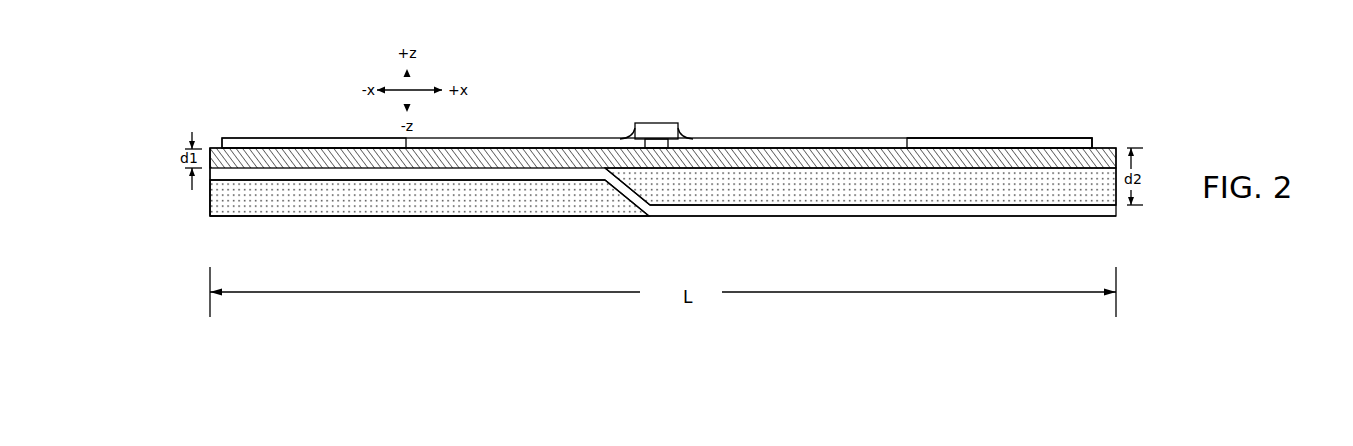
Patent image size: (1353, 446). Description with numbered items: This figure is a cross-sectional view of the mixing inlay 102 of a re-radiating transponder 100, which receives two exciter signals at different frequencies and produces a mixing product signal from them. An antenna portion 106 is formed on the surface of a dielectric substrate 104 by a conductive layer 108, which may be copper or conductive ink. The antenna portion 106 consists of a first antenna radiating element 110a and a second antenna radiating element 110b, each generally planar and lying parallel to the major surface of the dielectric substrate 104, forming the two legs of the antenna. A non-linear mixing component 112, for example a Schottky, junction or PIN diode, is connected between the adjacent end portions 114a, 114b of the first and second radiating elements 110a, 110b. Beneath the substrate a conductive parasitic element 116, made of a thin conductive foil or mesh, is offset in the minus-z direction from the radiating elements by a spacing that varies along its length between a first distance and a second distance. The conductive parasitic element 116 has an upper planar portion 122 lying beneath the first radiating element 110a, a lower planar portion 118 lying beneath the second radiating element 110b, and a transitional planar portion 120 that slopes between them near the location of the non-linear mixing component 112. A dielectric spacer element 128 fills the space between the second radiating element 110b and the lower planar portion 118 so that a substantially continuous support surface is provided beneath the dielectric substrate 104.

The re-radiating transponder 100 is at (1192, 90).
The mixing inlay 102 is at (207, 125).
The dielectric substrate 104 is at (1117, 148).
The antenna portion 106 is at (770, 107).
The conductive layer 108 is at (1097, 138).
The first antenna radiating element 110a is at (500, 115).
The second antenna radiating element 110b is at (885, 115).
The non-linear mixing component 112 is at (653, 123).
The end portion of first radiating element 114a is at (613, 139).
The end portion of second radiating element 114b is at (703, 139).
The conductive parasitic element 116 is at (713, 212).
The lower planar portion 118 is at (920, 212).
The transitional planar portion 120 is at (635, 197).
The upper planar portion 122 is at (437, 173).
The dielectric spacer element 128 is at (823, 196).